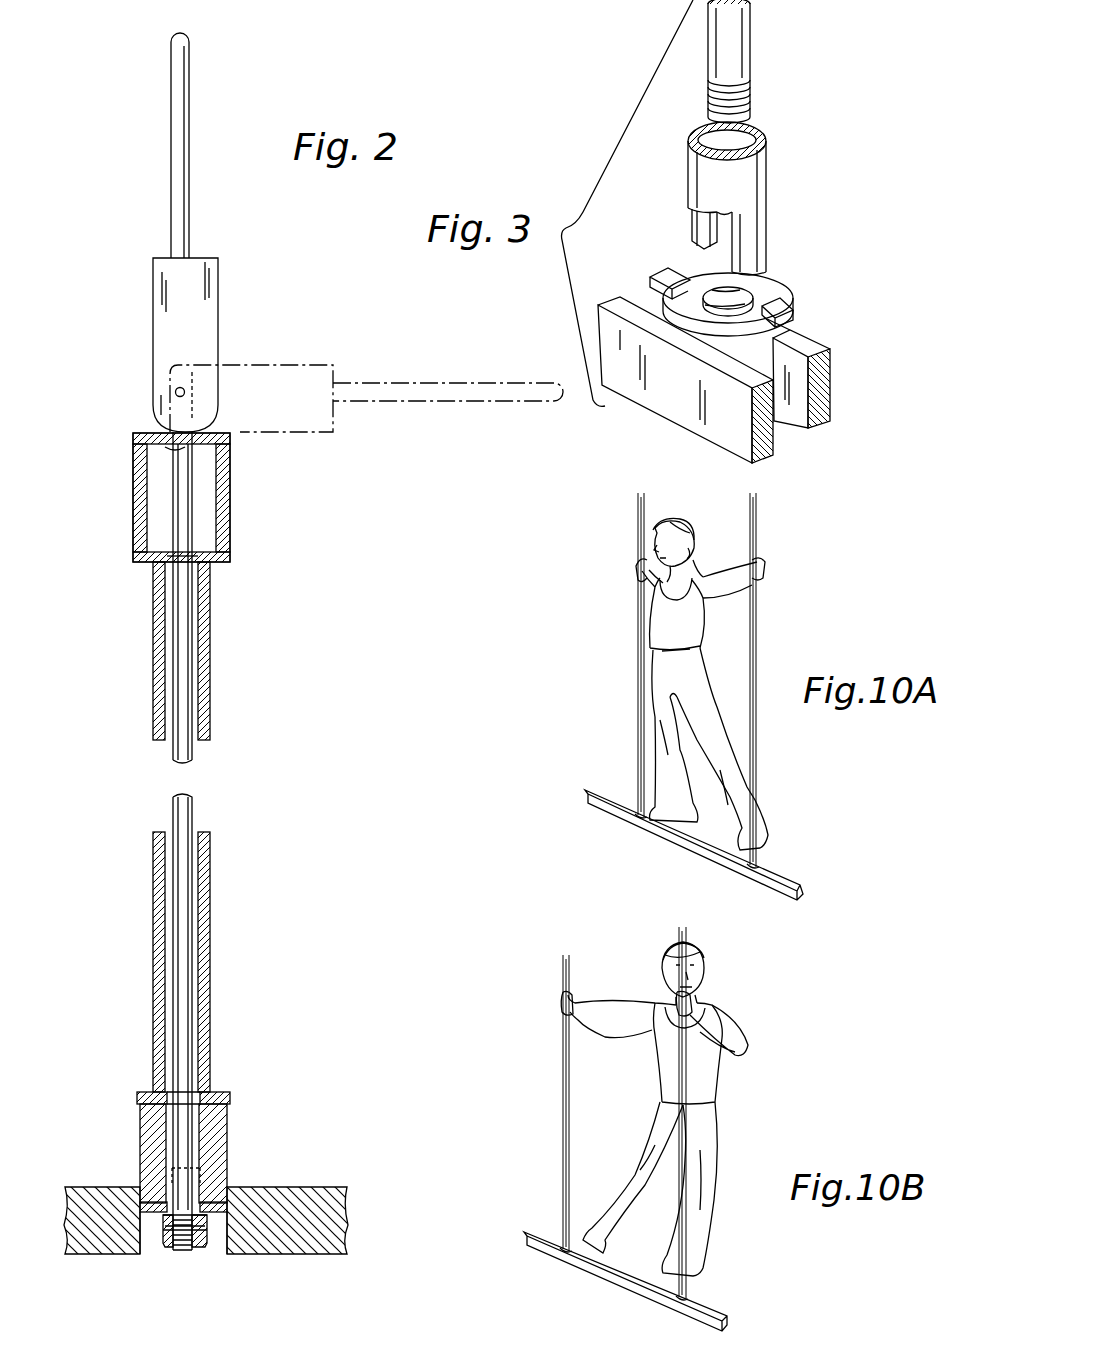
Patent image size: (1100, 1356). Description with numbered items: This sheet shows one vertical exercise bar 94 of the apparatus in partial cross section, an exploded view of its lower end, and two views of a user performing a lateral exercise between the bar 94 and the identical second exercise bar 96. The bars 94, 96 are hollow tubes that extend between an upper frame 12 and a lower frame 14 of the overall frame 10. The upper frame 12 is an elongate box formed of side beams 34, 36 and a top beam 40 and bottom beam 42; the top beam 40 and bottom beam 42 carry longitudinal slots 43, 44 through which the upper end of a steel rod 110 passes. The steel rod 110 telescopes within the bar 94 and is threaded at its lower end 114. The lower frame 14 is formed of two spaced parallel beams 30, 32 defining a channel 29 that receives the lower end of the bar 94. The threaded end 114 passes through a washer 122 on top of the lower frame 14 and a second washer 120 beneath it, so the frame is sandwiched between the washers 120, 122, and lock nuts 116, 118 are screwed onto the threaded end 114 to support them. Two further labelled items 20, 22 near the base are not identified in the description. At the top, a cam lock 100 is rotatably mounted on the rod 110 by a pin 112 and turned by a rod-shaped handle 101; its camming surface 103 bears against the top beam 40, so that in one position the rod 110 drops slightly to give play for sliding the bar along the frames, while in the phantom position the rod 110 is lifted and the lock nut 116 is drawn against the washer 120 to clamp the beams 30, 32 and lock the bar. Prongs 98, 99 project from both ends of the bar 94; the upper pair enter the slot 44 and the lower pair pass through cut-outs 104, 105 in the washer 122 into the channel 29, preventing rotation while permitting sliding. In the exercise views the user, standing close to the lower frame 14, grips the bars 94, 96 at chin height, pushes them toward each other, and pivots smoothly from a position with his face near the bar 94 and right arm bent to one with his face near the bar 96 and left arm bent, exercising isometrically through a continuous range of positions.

In FIG. 2, the frame 10 is at (252, 556).
In FIG. 2, the upper frame 12 is at (238, 492).
In FIG. 2, the lower frame 14 is at (130, 1110).
In FIG. 10A, the lower frame 14 is at (788, 880).
In FIG. 10B, the lower frame 14 is at (712, 1304).
In FIG. 2, the floor 20 is at (327, 1187).
In FIG. 2, the floor opening 22 is at (97, 1243).
In FIG. 2, the channel 29 is at (200, 1183).
In FIG. 3, the channel 29 is at (798, 391).
In FIG. 2, the beam 30 is at (222, 1125).
In FIG. 3, the beam 30 is at (826, 350).
In FIG. 2, the beam 32 is at (152, 1147).
In FIG. 3, the beam 32 is at (662, 398).
In FIG. 2, the beam 34 is at (227, 523).
In FIG. 2, the beam 36 is at (139, 503).
In FIG. 2, the top beam 40 is at (143, 432).
In FIG. 2, the bottom beam 42 is at (137, 562).
In FIG. 2, the longitudinal slot 43 is at (175, 447).
In FIG. 2, the longitudinal slot 44 is at (190, 562).
In FIG. 2, the exercise bar 94 is at (212, 718).
In FIG. 3, the exercise bar 94 is at (757, 179).
In FIG. 10A, the exercise bar 94 is at (637, 518).
In FIG. 10B, the exercise bar 94 is at (563, 968).
In FIG. 10A, the exercise bar 96 is at (757, 519).
In FIG. 10B, the exercise bar 96 is at (687, 935).
In FIG. 3, the prong 98 is at (757, 249).
In FIG. 2, the prong 99 is at (162, 1178).
In FIG. 3, the prong 99 is at (693, 230).
In FIG. 2, the cam lock 100 is at (222, 289).
In FIG. 2, the rod-shaped handle 101 is at (190, 80).
In FIG. 2, the camming surface 103 is at (220, 420).
In FIG. 3, the cut-out 104 is at (787, 322).
In FIG. 3, the cut-out 105 is at (682, 280).
In FIG. 2, the steel rod 110 is at (188, 808).
In FIG. 3, the steel rod 110 is at (742, 38).
In FIG. 2, the pin 112 is at (175, 390).
In FIG. 2, the threaded lower end 114 is at (183, 1252).
In FIG. 3, the threaded lower end 114 is at (745, 101).
In FIG. 2, the lock nut 116 is at (205, 1220).
In FIG. 2, the lock nut 118 is at (207, 1220).
In FIG. 2, the second washer 120 is at (226, 1188).
In FIG. 2, the washer 122 is at (222, 1093).
In FIG. 3, the washer 122 is at (788, 294).